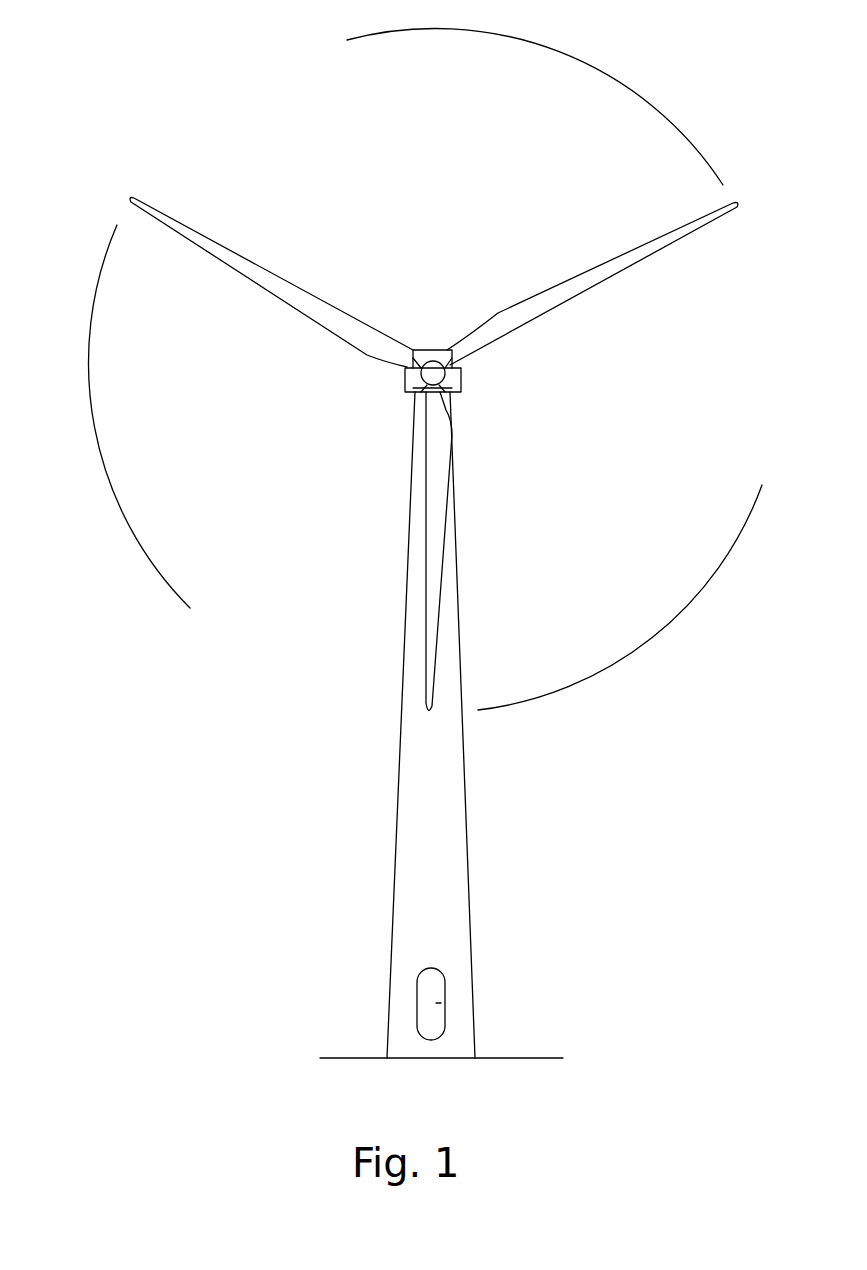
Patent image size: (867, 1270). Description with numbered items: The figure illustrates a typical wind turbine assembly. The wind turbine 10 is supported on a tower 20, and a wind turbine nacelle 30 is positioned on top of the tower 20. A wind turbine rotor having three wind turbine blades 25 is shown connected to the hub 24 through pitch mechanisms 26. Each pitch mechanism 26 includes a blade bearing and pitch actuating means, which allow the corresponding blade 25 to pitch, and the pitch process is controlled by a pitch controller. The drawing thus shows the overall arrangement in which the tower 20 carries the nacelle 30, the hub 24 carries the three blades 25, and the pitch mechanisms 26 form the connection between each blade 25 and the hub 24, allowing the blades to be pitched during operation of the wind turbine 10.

The wind turbine 10 is at (281, 769).
The tower 20 is at (445, 828).
The hub 24 is at (432, 368).
The wind turbine blades 25 is at (430, 612).
The pitch mechanisms 26 is at (462, 382).
The wind turbine nacelle 30 is at (462, 393).